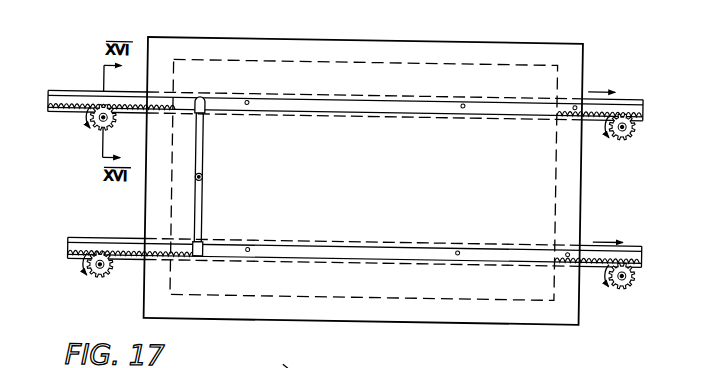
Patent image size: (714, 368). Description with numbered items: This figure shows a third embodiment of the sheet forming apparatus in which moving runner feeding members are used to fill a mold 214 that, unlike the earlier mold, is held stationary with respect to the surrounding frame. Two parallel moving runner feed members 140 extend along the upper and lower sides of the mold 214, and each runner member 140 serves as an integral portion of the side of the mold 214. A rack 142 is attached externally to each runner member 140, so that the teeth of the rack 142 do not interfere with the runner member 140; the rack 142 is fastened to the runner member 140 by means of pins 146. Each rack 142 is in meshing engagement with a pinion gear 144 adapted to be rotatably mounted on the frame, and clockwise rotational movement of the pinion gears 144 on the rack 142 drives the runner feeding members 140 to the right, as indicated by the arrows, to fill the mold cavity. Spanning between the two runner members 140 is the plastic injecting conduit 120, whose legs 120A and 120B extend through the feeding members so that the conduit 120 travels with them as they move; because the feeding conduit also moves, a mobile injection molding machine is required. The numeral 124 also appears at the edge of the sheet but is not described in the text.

The mold 214 is at (429, 38).
The moving runner feed member 140 is at (63, 92).
The rack means 142 is at (72, 114).
The pinion gear 144 is at (105, 128).
The pins 146 is at (464, 99).
The plastic injecting conduit 120 is at (205, 176).
The leg of plastic injecting conduit 120A is at (202, 96).
The leg of plastic injecting conduit 120B is at (202, 256).
The member 124 is at (701, 16).